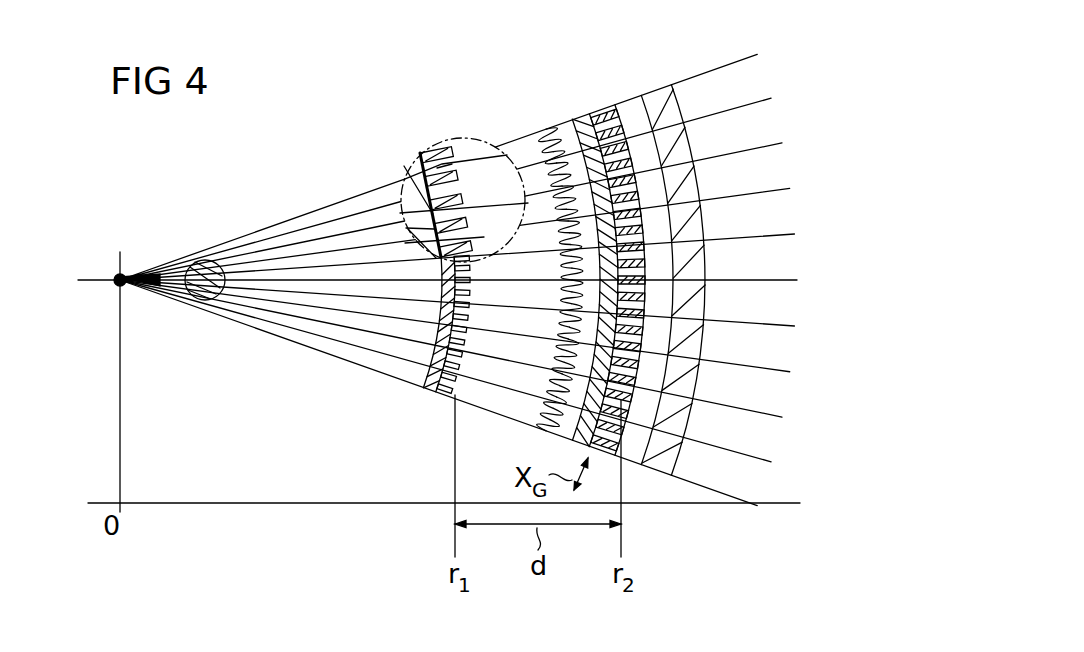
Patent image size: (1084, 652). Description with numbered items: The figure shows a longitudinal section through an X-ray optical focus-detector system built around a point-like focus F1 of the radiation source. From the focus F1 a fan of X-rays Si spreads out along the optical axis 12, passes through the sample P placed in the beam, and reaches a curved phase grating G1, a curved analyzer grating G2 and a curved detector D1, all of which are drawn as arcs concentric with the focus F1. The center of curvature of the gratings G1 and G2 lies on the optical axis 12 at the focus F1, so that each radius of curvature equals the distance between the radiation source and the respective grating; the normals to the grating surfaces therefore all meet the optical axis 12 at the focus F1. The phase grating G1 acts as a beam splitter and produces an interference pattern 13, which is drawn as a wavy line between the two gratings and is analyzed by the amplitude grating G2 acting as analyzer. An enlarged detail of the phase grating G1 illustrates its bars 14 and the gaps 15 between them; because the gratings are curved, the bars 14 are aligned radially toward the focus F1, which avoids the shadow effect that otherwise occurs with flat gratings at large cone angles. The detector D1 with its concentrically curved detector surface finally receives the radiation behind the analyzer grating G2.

The optical axis 12 is at (437, 318).
The interference pattern 13 is at (559, 239).
The bars 14 is at (438, 150).
The gaps 15 is at (462, 192).
The focus F1 is at (104, 244).
The sample P is at (204, 245).
The X-ray Si is at (166, 64).
The phase grating G1 is at (437, 364).
The analyzer grating G2 is at (608, 250).
The detector D1 is at (673, 256).